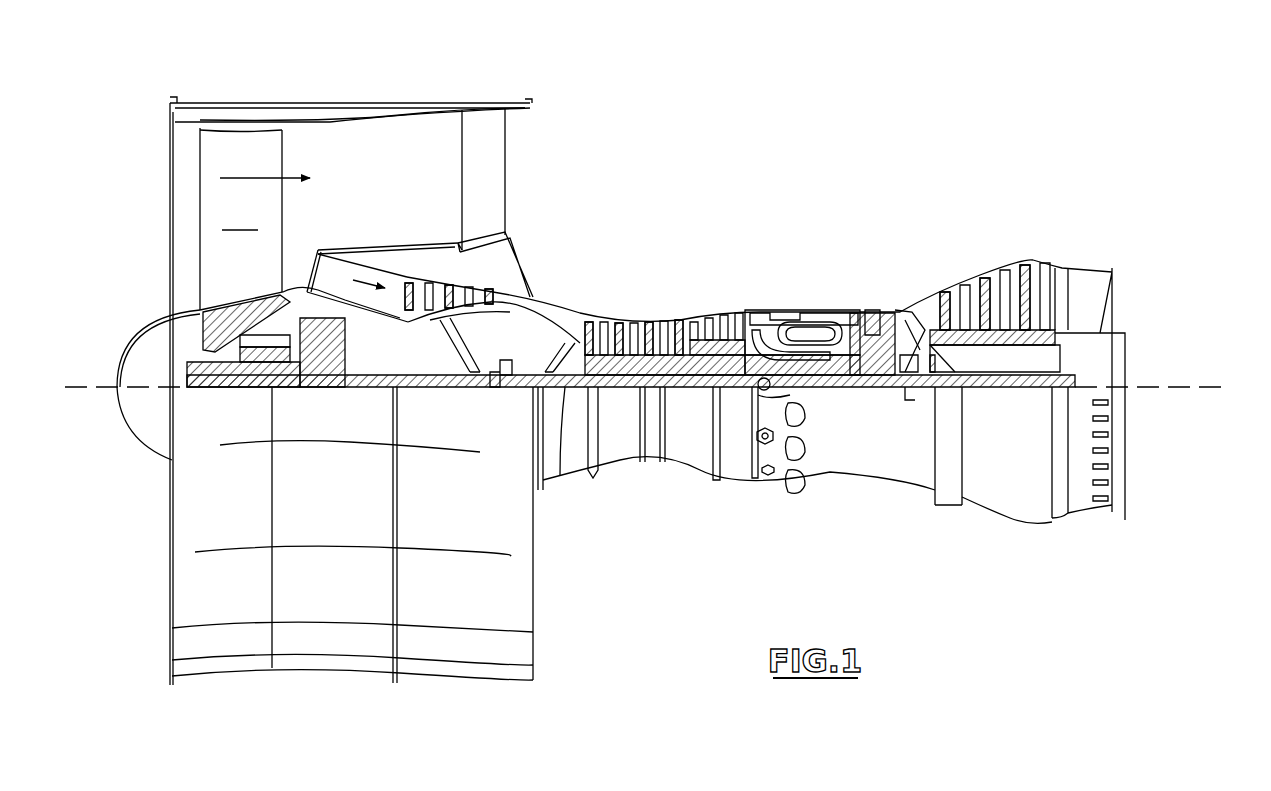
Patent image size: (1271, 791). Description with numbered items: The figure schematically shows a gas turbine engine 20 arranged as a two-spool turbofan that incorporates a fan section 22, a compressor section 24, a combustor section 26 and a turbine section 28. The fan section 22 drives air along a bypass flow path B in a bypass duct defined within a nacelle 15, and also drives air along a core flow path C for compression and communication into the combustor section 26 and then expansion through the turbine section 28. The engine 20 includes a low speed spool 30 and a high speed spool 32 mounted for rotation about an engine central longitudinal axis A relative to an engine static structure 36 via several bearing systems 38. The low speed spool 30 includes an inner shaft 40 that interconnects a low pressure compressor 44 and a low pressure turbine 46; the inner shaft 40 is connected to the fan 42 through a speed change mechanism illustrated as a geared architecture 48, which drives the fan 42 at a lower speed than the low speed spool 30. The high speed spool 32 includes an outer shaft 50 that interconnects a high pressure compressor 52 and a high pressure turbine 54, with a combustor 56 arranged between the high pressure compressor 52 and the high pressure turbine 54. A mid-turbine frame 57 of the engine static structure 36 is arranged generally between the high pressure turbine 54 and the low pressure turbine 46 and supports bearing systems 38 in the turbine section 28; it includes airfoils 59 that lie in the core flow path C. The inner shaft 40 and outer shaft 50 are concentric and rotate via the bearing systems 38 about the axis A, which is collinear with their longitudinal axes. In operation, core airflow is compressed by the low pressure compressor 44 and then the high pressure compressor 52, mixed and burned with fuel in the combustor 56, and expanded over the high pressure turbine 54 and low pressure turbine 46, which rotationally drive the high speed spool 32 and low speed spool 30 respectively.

The gas turbine engine 20 is at (812, 152).
The fan section 22 is at (283, 92).
The nacelle 15 is at (352, 103).
The fan 42 is at (353, 405).
The low pressure compressor 44 is at (448, 298).
The compressor section 24 is at (584, 298).
The high pressure compressor 52 is at (662, 350).
The combustor section 26 is at (810, 283).
The high speed spool 32 is at (735, 312).
The combustor 56 is at (806, 330).
The high pressure turbine 54 is at (872, 308).
The mid-turbine frame 57 is at (914, 292).
The turbine section 28 is at (955, 245).
The low pressure turbine 46 is at (1000, 262).
The airfoils 59 is at (944, 348).
The outer shaft 50 is at (814, 383).
The bearing systems 38 is at (497, 390).
The geared architecture 48 is at (357, 380).
The inner shaft 40 is at (560, 480).
The low speed spool 30 is at (690, 400).
The engine static structure 36 is at (731, 482).
The engine central longitudinal axis A is at (1203, 387).
The bypass flow path B is at (260, 178).
The core flow path C is at (345, 282).